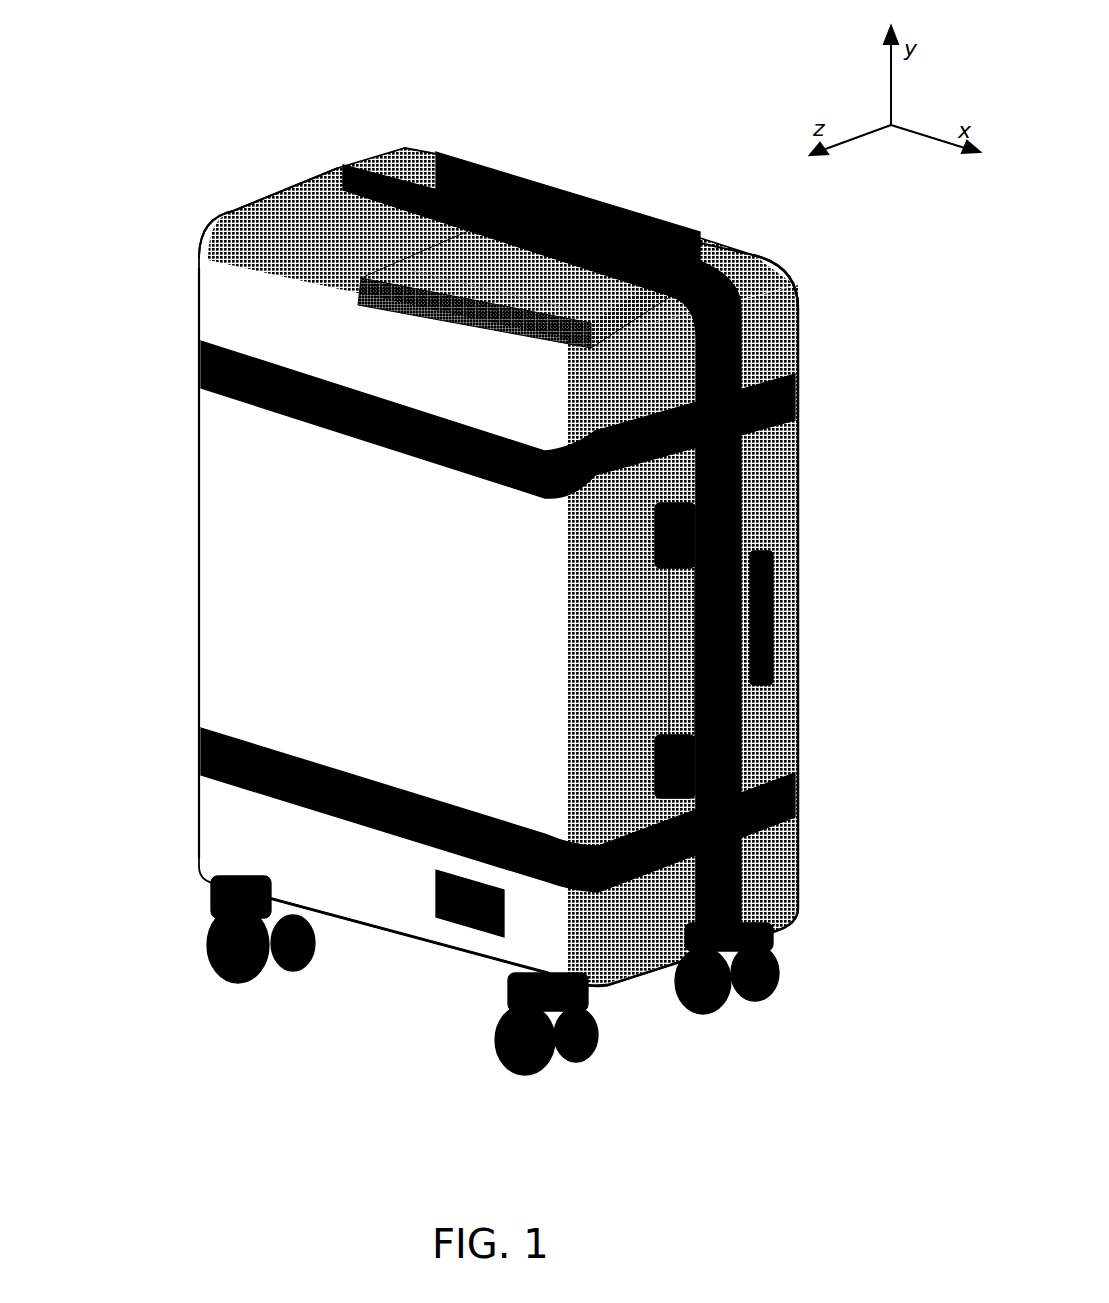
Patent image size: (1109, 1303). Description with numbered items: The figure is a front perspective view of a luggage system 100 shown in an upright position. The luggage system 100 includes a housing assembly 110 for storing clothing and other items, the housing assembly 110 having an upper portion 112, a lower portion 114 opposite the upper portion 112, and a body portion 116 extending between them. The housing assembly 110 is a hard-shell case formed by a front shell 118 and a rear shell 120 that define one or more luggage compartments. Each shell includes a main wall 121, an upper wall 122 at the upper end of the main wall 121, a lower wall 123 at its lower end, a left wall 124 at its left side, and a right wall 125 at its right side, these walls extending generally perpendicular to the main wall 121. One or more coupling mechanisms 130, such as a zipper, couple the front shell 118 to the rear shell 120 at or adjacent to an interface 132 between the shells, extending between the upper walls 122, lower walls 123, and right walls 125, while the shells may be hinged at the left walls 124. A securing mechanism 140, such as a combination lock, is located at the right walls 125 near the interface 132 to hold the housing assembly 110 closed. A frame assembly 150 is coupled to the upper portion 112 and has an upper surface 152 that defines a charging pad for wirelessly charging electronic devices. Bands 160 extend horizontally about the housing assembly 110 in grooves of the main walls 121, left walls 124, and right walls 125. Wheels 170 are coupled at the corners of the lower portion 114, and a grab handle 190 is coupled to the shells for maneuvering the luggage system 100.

The luggage system 100 is at (518, 642).
The housing assembly 110 is at (178, 200).
The upper portion 112 is at (842, 305).
The lower portion 114 is at (832, 853).
The body portion 116 is at (862, 600).
The front shell 118 is at (220, 470).
The rear shell 120 is at (775, 545).
The main wall 121 is at (323, 583).
The upper wall 122 is at (712, 255).
The lower wall 123 is at (623, 995).
The left wall 124 is at (238, 188).
The right wall 125 is at (768, 740).
The coupling mechanism 130 is at (740, 380).
The interface 132 is at (731, 513).
The securing mechanism 140 is at (772, 660).
The frame assembly 150 is at (418, 262).
The upper surface 152 is at (530, 290).
The band 160 is at (420, 430).
The wheel 170 is at (237, 967).
The grab handle 190 is at (570, 180).